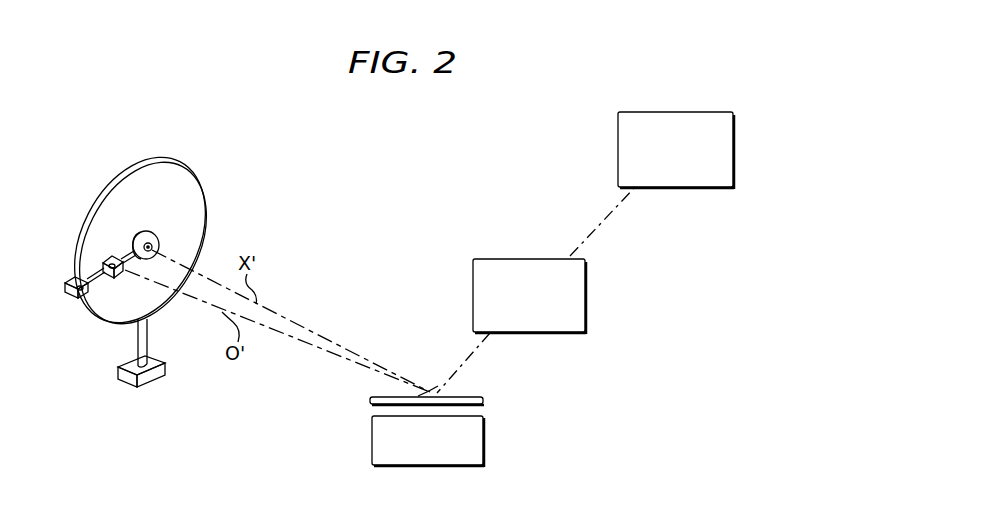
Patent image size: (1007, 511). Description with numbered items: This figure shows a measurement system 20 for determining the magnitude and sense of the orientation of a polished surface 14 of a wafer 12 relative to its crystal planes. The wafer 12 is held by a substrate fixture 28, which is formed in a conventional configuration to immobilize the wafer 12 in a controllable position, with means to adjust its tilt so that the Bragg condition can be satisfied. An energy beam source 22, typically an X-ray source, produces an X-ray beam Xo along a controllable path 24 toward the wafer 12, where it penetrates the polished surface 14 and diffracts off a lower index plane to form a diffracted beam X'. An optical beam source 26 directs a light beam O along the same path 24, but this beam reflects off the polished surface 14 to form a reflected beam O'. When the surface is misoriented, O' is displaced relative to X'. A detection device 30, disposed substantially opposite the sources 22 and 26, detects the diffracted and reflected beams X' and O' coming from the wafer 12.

The measurement system 20 is at (348, 168).
The detection device 30 is at (80, 186).
The wafer 12 is at (370, 400).
The polished surface 14 is at (434, 394).
The energy beam source 22 is at (522, 258).
The controllable path 24 is at (474, 346).
The optical beam source 26 is at (677, 112).
The substrate fixture 28 is at (485, 443).